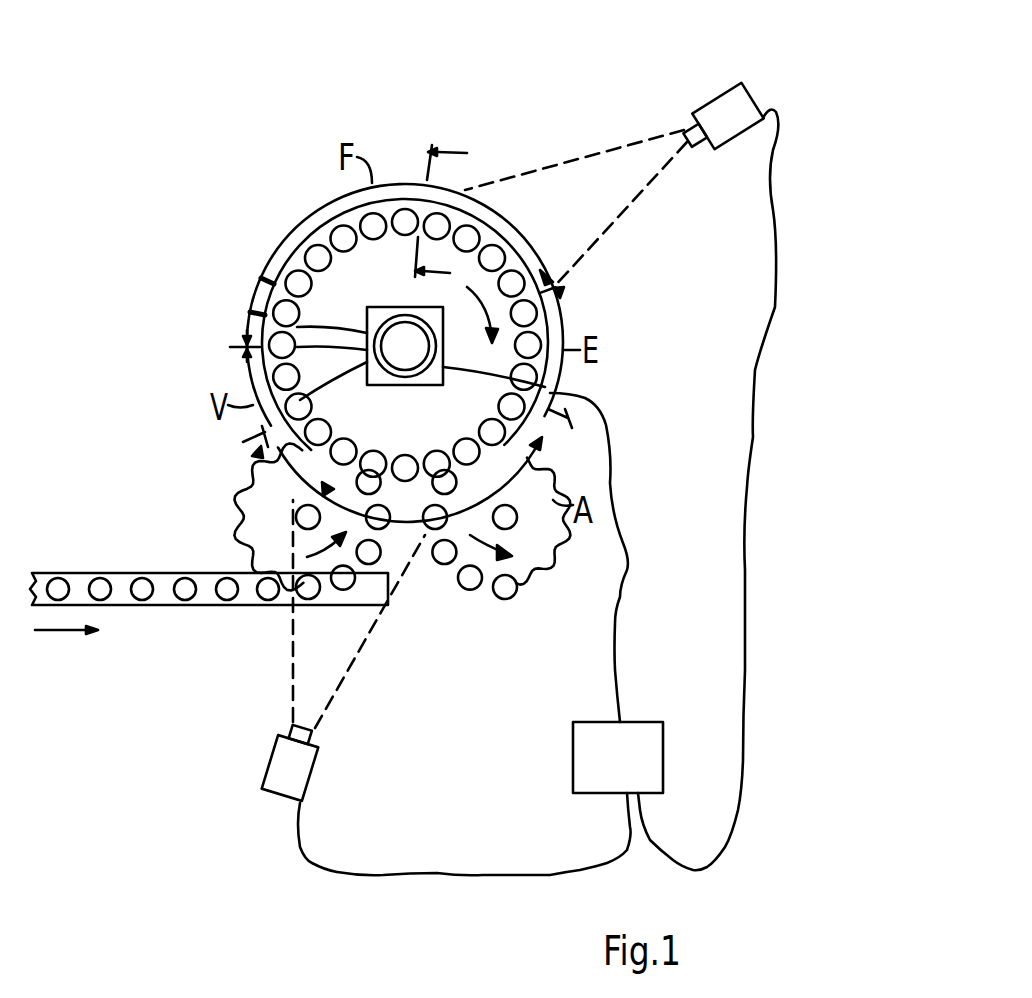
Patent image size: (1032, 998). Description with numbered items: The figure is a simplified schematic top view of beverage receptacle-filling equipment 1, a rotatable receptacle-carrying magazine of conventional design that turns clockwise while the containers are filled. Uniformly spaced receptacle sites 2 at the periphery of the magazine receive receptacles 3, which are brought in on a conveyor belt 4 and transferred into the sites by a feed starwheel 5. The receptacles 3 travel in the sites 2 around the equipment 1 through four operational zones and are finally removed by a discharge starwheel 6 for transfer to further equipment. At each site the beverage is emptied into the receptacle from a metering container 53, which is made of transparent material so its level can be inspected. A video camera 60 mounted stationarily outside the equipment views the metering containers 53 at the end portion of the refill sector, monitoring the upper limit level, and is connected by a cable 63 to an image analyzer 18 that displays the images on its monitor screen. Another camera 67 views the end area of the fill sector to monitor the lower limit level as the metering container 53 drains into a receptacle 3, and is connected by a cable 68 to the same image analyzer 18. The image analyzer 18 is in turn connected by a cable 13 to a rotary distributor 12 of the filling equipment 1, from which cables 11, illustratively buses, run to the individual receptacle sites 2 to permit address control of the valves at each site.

The beverage receptacle-filling equipment 1 is at (230, 220).
The receptacle sites 2 is at (200, 305).
The receptacles 3 is at (150, 592).
The conveyor belt 4 is at (205, 590).
The feed starwheel 5 is at (275, 502).
The discharge starwheel 6 is at (533, 553).
The cables 11 is at (317, 322).
The rotary distributor 12 is at (392, 387).
The cable 13 is at (620, 612).
The image analyzer 18 is at (593, 763).
The metering container 53 is at (340, 236).
The video camera 60 is at (297, 770).
The cable 63 is at (487, 873).
The camera 67 is at (717, 110).
The cable 68 is at (773, 223).